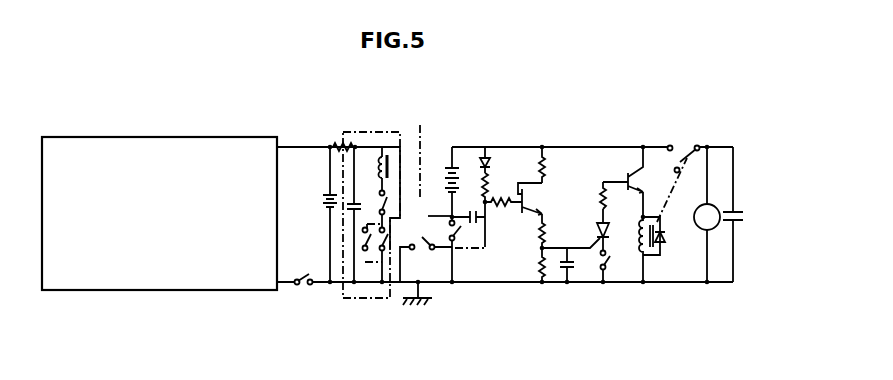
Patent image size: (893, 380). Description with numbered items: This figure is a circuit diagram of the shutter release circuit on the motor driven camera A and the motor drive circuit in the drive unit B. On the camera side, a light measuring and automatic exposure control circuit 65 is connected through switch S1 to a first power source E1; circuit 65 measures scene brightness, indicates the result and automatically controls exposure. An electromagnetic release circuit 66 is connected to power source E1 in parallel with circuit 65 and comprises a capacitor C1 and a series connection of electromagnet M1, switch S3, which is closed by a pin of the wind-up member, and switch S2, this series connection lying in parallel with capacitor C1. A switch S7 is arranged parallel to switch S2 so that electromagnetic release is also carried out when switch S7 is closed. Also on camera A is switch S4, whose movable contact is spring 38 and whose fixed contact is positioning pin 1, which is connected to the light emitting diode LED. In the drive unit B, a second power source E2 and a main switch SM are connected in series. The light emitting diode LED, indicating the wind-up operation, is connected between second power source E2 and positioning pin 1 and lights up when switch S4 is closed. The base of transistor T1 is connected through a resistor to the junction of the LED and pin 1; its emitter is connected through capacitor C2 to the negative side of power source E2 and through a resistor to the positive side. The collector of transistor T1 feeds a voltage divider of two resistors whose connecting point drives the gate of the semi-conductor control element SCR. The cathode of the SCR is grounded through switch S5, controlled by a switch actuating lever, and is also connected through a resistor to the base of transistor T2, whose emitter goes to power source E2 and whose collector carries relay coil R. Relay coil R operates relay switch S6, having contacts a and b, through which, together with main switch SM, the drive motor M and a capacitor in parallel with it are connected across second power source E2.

The light measuring and automatic exposure control circuit 65 is at (164, 283).
The electromagnetic release circuit 66 is at (357, 132).
The spring 38 is at (434, 224).
The positioning pin 1 is at (432, 249).
The motor driven camera A is at (293, 126).
The drive unit B is at (589, 135).
The switch S1 is at (299, 286).
The switch S2 is at (373, 250).
The switch S3 is at (378, 196).
The switch S4 is at (426, 259).
The switch S5 is at (608, 262).
The relay switch S6 is at (690, 152).
The switch S7 is at (362, 243).
The main switch SM is at (460, 233).
The capacitor C1 is at (352, 203).
The capacitor C2 is at (480, 226).
The first power source E1 is at (327, 197).
The second power source E2 is at (463, 173).
The electromagnet M1 is at (390, 158).
The light emitting diode LED is at (487, 160).
The transistor T1 is at (531, 198).
The transistor T2 is at (641, 175).
The semi-conductor control element SCR is at (577, 229).
The relay coil R is at (638, 230).
The contact a is at (669, 145).
The contact b is at (676, 171).
The drive motor M is at (707, 215).